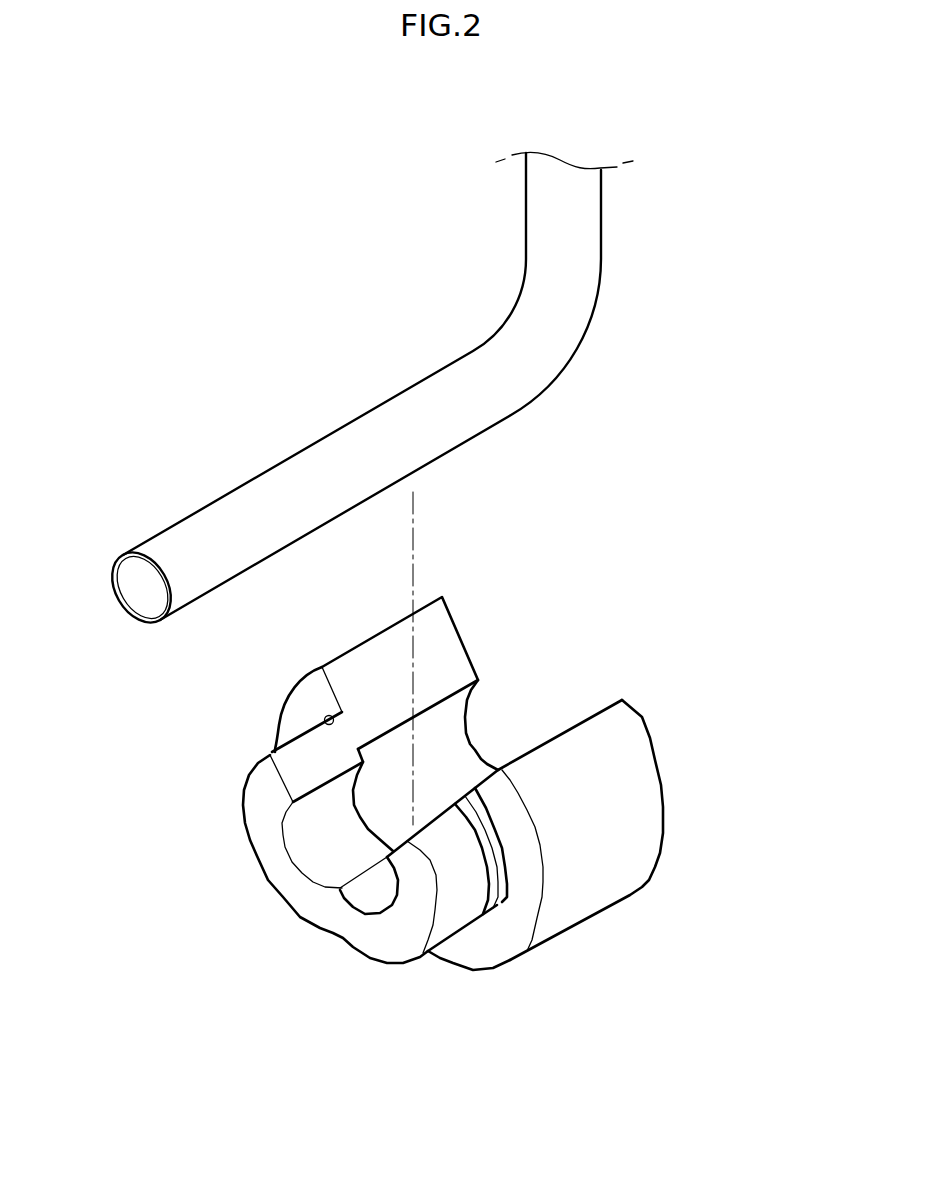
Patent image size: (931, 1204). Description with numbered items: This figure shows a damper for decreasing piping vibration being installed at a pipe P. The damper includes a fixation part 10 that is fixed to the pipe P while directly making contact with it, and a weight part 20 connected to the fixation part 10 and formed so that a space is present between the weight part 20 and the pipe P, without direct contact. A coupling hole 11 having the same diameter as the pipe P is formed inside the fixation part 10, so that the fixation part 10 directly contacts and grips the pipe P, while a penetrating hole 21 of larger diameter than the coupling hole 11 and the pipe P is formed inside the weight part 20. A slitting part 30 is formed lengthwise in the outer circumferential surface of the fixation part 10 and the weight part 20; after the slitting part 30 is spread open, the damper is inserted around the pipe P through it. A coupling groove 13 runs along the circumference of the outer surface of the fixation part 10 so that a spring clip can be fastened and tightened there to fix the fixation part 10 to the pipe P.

The pipe P is at (460, 413).
The fixation part 10 is at (228, 768).
The coupling hole 11 is at (322, 837).
The coupling groove 13 is at (498, 908).
The weight part 20 is at (668, 803).
The penetrating hole 21 is at (462, 758).
The slitting part 30 is at (553, 732).